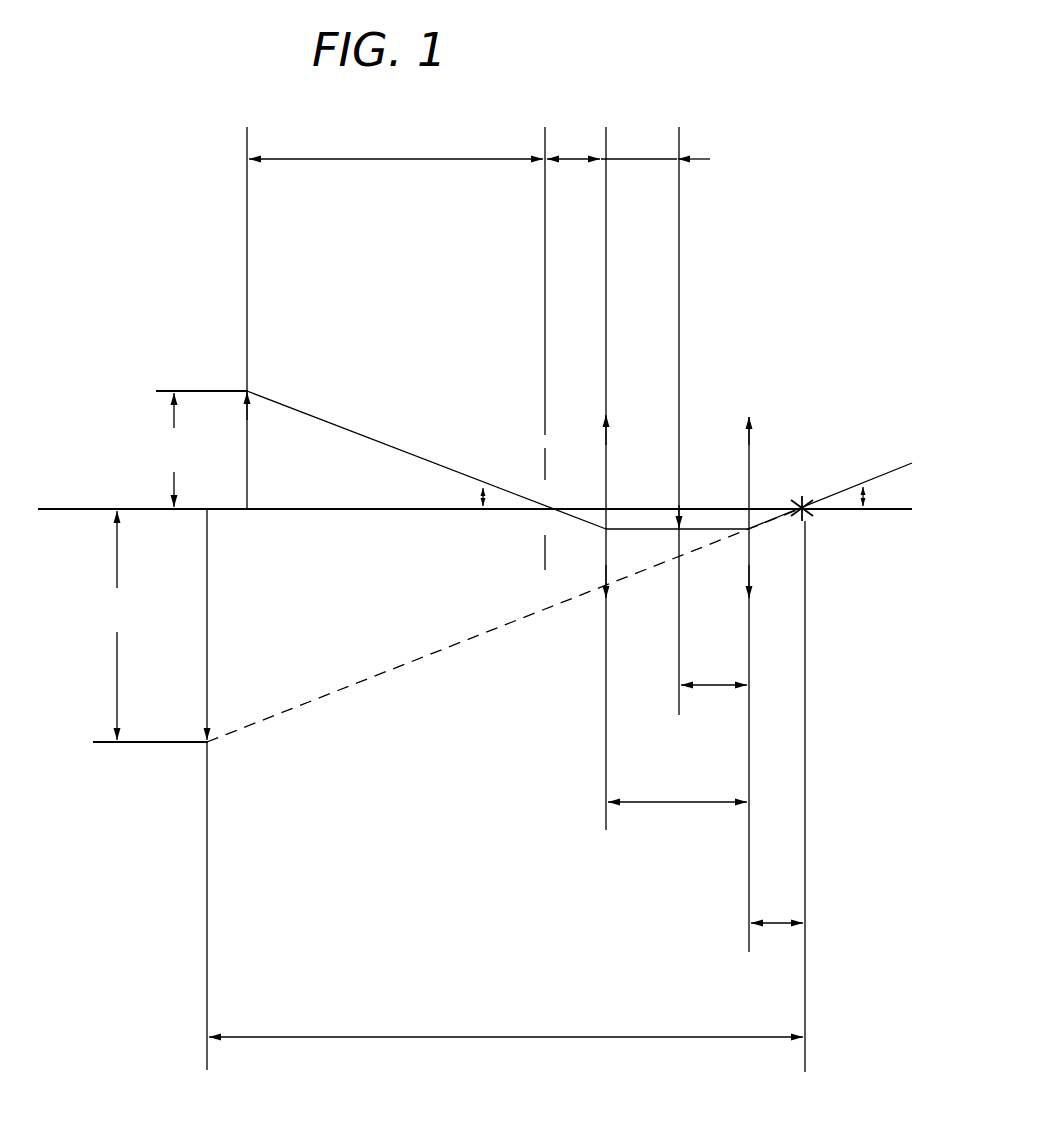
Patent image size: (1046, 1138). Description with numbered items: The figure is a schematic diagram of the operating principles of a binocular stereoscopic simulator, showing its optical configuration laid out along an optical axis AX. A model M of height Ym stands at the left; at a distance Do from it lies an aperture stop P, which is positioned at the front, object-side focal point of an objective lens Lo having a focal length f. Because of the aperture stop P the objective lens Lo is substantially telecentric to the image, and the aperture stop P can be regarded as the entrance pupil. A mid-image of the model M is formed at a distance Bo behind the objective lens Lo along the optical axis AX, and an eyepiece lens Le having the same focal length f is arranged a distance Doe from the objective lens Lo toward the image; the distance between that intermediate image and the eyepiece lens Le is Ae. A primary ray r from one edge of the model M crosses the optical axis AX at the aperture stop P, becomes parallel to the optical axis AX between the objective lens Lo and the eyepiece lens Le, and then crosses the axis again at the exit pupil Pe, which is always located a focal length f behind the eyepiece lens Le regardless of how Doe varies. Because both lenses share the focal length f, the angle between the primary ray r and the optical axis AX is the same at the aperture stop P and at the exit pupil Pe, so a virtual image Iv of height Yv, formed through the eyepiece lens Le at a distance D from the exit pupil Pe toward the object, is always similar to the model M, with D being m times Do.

The optical axis AX is at (92, 506).
The model M is at (249, 488).
The height dimension of the model Ym is at (177, 450).
The height dimension of the virtual image Yv is at (150, 626).
The virtual image Iv is at (207, 640).
The primary ray r is at (448, 449).
The aperture stop P is at (545, 560).
The objective lens Lo is at (608, 468).
The distance from the objective lens to the mid-image Bo is at (655, 421).
The distance between the model and the aperture stop Do is at (396, 143).
The focal length f is at (675, 526).
The eyepiece lens Le is at (751, 468).
The exit pupil Pe is at (803, 500).
The distance between the intermediate image and the eyepiece lens Ae is at (714, 669).
The distance between the objective lens and the eyepiece lens Doe is at (677, 786).
The distance between the virtual image and the exit pupil D is at (506, 1020).